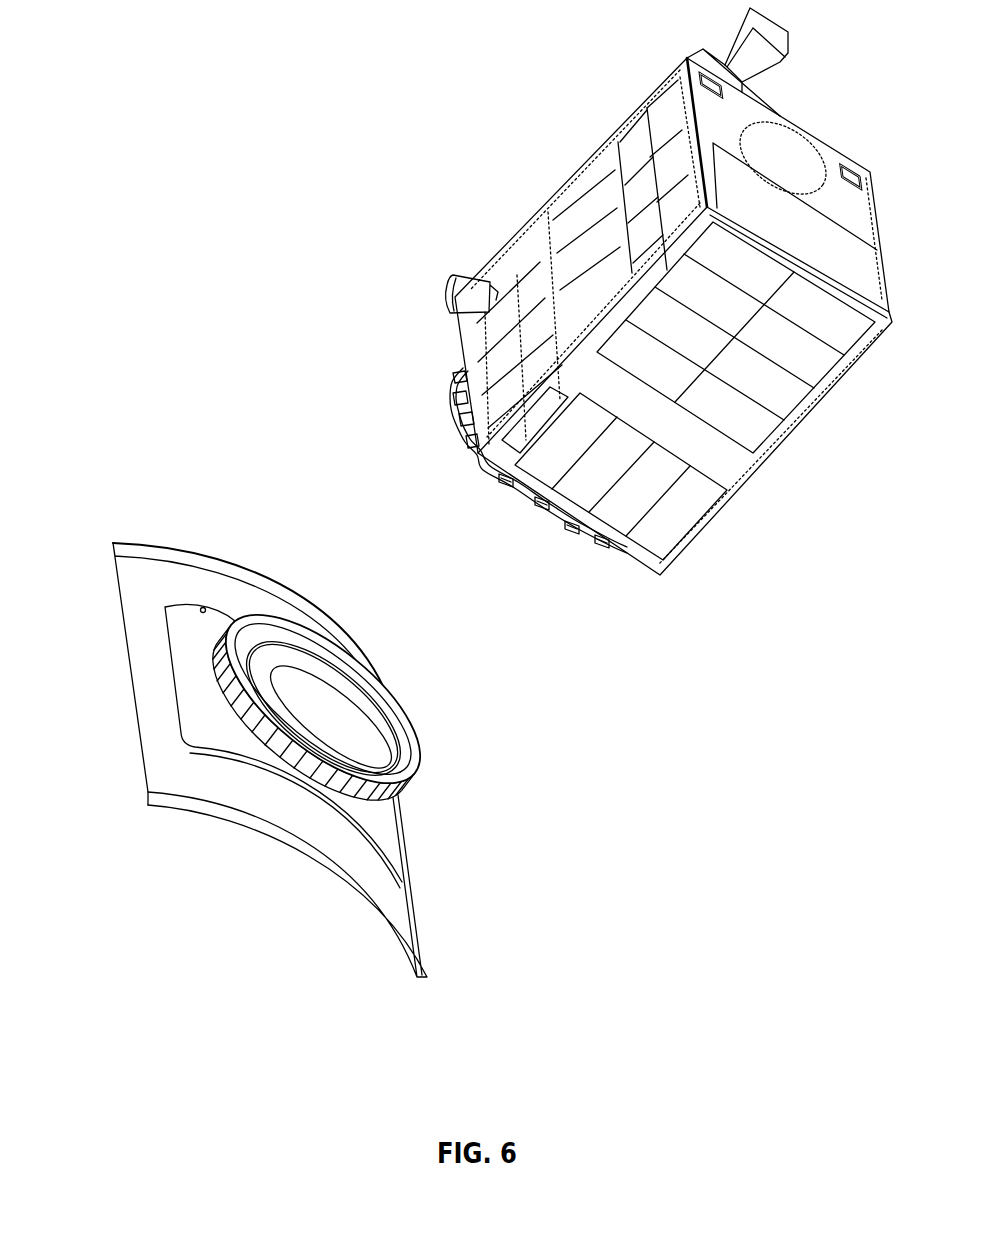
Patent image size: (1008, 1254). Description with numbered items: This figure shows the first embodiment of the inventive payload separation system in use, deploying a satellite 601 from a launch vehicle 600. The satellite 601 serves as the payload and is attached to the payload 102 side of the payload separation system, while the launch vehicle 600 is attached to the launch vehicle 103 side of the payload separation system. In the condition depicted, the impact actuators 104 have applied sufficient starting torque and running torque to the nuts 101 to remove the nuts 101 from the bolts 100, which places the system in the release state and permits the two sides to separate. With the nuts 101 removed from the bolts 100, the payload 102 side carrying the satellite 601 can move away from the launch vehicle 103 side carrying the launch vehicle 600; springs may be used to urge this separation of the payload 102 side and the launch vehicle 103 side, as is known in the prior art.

The bolts 100 is at (517, 498).
The nuts 101 is at (238, 626).
The payload side of the payload separation system 102 is at (557, 523).
The launch vehicle side of the payload separation system 103 is at (223, 663).
The impact actuators 104 is at (273, 725).
The launch vehicle 600 is at (162, 576).
The satellite 601 is at (472, 350).